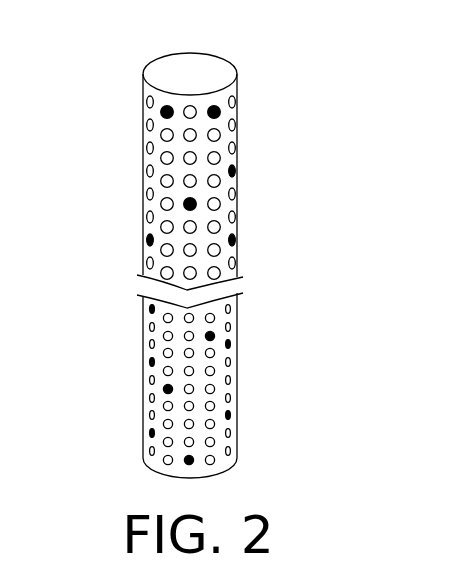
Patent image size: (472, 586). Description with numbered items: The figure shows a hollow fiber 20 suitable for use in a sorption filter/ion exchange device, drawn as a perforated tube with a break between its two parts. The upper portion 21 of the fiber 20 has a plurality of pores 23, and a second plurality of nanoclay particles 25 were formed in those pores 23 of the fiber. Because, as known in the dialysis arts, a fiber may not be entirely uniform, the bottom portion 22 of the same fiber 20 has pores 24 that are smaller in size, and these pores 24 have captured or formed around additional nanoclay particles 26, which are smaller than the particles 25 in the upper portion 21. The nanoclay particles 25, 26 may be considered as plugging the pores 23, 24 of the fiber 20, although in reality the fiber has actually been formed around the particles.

The fiber 20 is at (262, 86).
The upper portion 21 is at (142, 185).
The bottom portion 22 is at (143, 415).
The pores 23 is at (216, 137).
The pores 24 is at (216, 391).
The nanoclay particles 25 is at (234, 172).
The nanoclay particles 26 is at (231, 346).